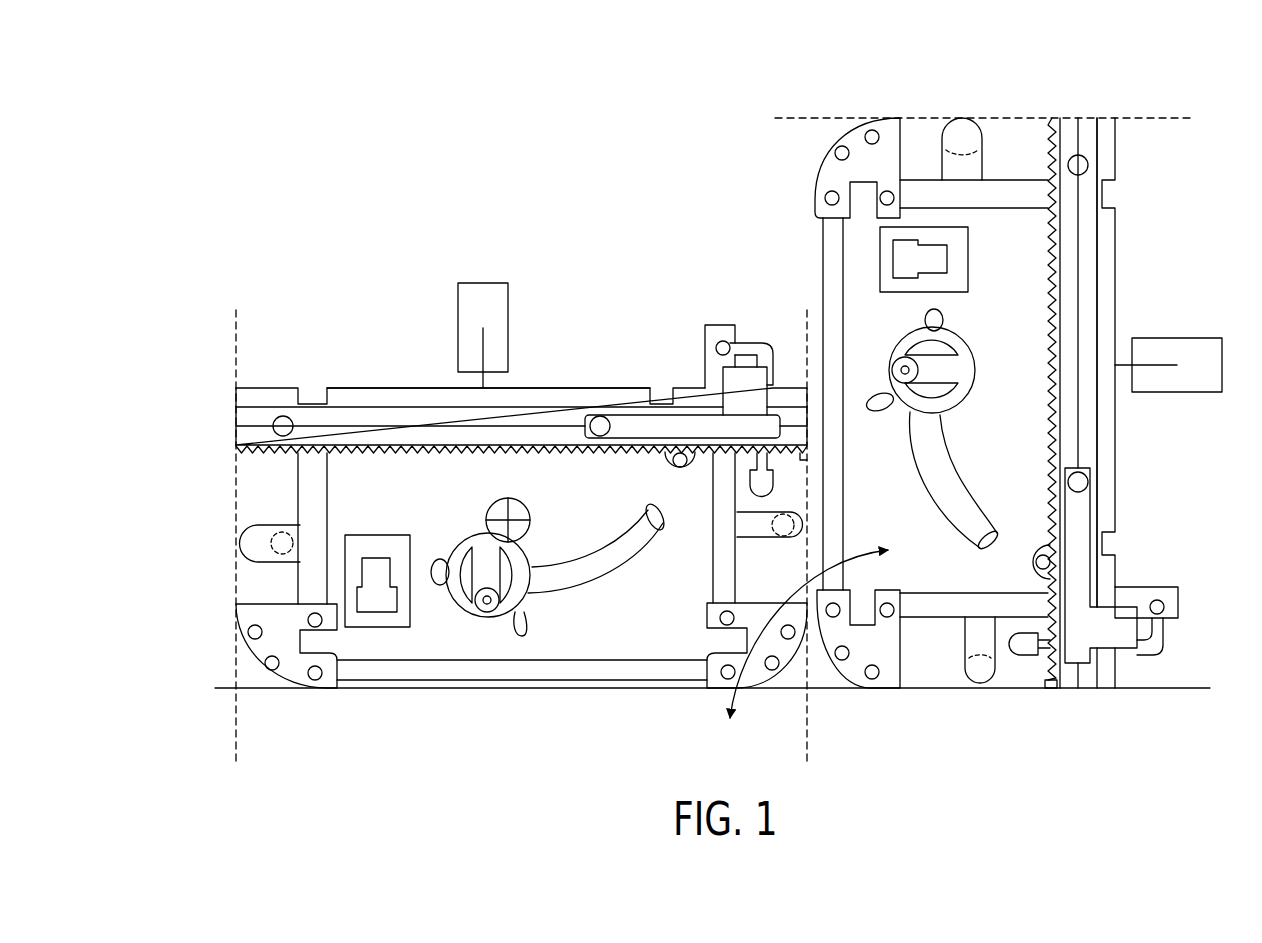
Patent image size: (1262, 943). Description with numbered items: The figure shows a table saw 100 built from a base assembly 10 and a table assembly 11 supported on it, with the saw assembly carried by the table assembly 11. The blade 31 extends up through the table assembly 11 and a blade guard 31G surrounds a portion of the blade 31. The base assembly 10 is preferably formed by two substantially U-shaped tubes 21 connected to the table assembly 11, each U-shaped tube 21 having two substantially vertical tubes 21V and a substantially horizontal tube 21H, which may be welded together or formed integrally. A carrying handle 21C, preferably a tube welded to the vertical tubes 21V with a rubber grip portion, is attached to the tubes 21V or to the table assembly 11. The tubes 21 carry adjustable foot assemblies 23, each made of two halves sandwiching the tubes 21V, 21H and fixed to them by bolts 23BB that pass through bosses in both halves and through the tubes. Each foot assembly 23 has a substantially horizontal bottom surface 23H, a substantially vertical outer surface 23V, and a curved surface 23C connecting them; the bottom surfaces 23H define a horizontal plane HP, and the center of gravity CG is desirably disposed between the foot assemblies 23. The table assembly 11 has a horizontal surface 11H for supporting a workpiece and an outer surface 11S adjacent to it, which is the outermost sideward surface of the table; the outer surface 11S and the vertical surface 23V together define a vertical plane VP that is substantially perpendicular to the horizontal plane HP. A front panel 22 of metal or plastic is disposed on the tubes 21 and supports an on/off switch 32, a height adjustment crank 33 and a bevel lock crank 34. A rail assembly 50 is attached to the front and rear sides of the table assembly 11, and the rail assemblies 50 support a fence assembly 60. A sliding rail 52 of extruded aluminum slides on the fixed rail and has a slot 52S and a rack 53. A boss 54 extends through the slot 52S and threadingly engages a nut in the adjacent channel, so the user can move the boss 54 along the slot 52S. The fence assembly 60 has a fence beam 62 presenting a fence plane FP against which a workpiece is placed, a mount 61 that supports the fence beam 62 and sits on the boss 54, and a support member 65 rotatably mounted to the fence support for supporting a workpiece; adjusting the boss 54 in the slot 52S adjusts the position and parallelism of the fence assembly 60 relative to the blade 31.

The table saw 100 is at (418, 300).
The base assembly 10 is at (443, 623).
The table assembly 11 is at (553, 388).
The horizontal surface 11H is at (363, 388).
The outer surface 11S is at (238, 407).
The U-shaped tube 21 is at (307, 535).
The vertical tube 21V is at (310, 488).
The horizontal tube 21H is at (507, 670).
The carrying handle 21C is at (785, 527).
The front panel 22 is at (372, 478).
The foot assembly 23 is at (317, 680).
The bottom surface 23H is at (765, 682).
The vertical outer surface 23V is at (877, 687).
The curved surface 23C is at (848, 683).
The bolt 23BB is at (872, 127).
The blade 31 is at (485, 343).
The blade guard 31G is at (485, 283).
The on/off switch 32 is at (370, 570).
The height adjustment crank 33 is at (467, 603).
The bevel lock crank 34 is at (523, 633).
The rail assembly 50 is at (418, 388).
The sliding rail 52 is at (1105, 298).
The slot 52S is at (1098, 258).
The rack 53 is at (267, 452).
The boss 54 is at (1083, 168).
The fence assembly 60 is at (1180, 640).
The mount 61 is at (1118, 640).
The fence beam 62 is at (722, 327).
The support member 65 is at (762, 345).
The center of gravity CG is at (520, 512).
The fence plane FP is at (1147, 587).
The vertical plane VP is at (232, 347).
The horizontal plane HP is at (250, 690).